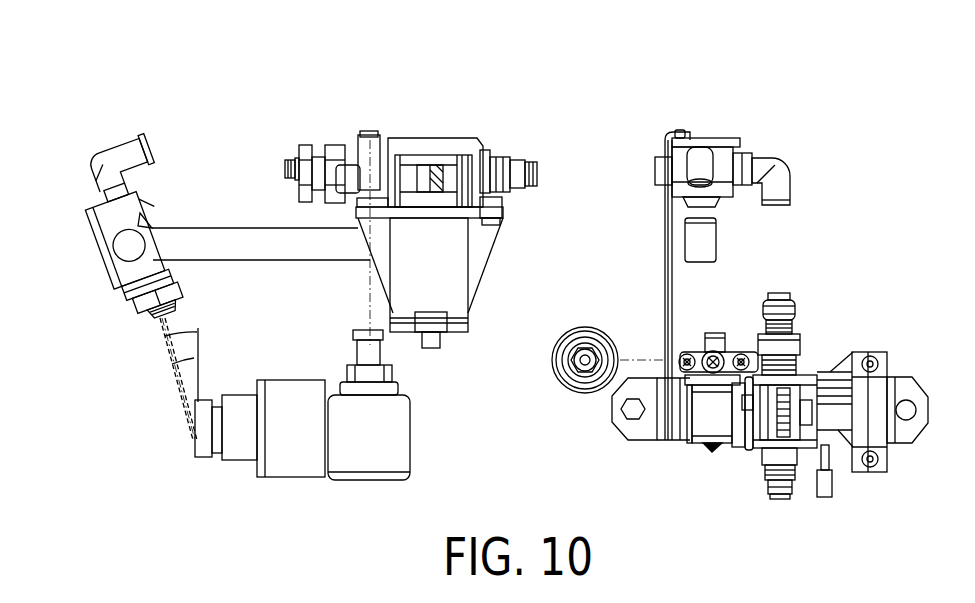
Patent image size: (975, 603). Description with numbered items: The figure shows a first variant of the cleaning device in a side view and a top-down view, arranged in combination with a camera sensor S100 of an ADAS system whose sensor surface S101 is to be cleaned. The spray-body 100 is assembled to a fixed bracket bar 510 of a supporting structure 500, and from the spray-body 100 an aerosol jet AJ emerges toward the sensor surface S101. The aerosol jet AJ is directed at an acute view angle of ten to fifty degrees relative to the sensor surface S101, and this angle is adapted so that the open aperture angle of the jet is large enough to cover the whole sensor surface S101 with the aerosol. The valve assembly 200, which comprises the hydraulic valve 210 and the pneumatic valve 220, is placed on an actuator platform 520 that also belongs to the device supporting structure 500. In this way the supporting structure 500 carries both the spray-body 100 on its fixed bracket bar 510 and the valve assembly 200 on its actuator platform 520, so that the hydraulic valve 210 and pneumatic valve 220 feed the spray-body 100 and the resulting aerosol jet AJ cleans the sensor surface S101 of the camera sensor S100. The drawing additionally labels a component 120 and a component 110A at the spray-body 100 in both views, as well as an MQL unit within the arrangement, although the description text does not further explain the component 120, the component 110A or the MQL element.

The supporting structure 500 is at (148, 105).
The spray-body 100 is at (80, 220).
The valve 120 is at (103, 252).
The nozzle 110A is at (108, 296).
The aerosol jet AJ is at (165, 356).
The fixed bracket bar 510 is at (283, 250).
The actuator platform 520 is at (465, 282).
The camera sensor S100 is at (186, 434).
The sensor surface S101 is at (192, 440).
The minimum quantity lubrication supply MQL is at (400, 432).
The valve assembly 200 is at (458, 124).
The pneumatic valve 220 is at (432, 137).
The hydraulic valve 210 is at (688, 423).